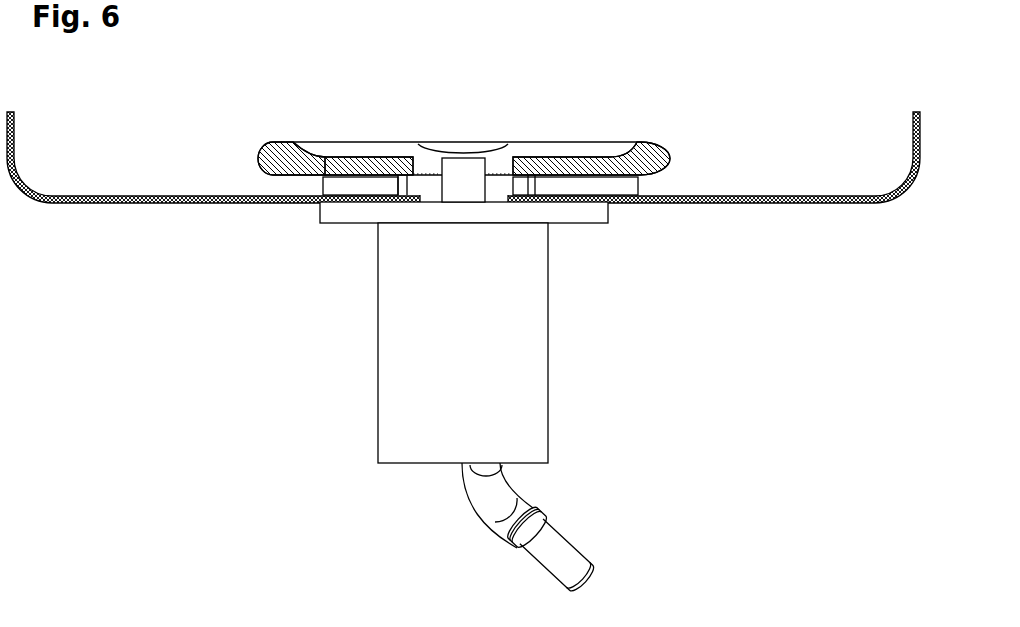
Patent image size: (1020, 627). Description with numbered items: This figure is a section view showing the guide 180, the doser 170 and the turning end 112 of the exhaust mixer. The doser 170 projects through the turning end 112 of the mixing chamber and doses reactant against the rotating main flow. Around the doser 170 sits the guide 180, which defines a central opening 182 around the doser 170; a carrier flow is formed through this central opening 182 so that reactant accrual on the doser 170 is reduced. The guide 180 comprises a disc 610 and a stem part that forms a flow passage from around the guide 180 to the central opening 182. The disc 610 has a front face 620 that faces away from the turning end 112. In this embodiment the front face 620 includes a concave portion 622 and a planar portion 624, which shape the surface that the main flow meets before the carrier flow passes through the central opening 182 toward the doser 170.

The turning end 112 is at (463, 155).
The doser 170 is at (487, 399).
The guide 180 is at (469, 130).
The central opening 182 is at (463, 130).
The disc 610 is at (255, 117).
The front face 620 is at (594, 122).
The concave portion 622 is at (465, 117).
The planar portion 624 is at (386, 124).